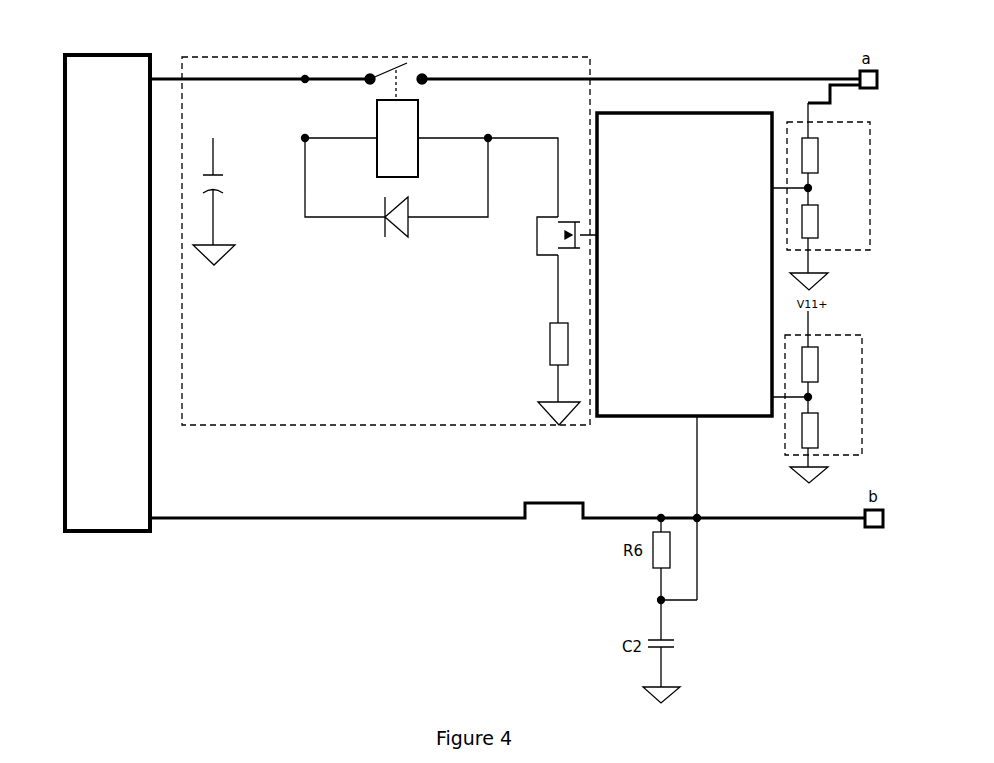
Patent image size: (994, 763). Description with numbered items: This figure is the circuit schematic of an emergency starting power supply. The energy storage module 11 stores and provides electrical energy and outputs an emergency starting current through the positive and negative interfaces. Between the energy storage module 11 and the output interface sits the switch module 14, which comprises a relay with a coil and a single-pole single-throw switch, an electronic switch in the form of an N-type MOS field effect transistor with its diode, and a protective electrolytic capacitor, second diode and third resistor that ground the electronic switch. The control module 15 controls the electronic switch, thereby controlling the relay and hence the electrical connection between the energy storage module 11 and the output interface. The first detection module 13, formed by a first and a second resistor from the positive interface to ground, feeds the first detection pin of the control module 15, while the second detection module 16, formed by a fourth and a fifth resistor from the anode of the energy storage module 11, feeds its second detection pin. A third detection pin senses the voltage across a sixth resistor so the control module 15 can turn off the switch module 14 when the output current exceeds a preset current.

The energy storage module 11 is at (100, 55).
The first detection module 13 is at (832, 247).
The switch module 14 is at (402, 425).
The control module 15 is at (668, 420).
The second detection module 16 is at (785, 437).